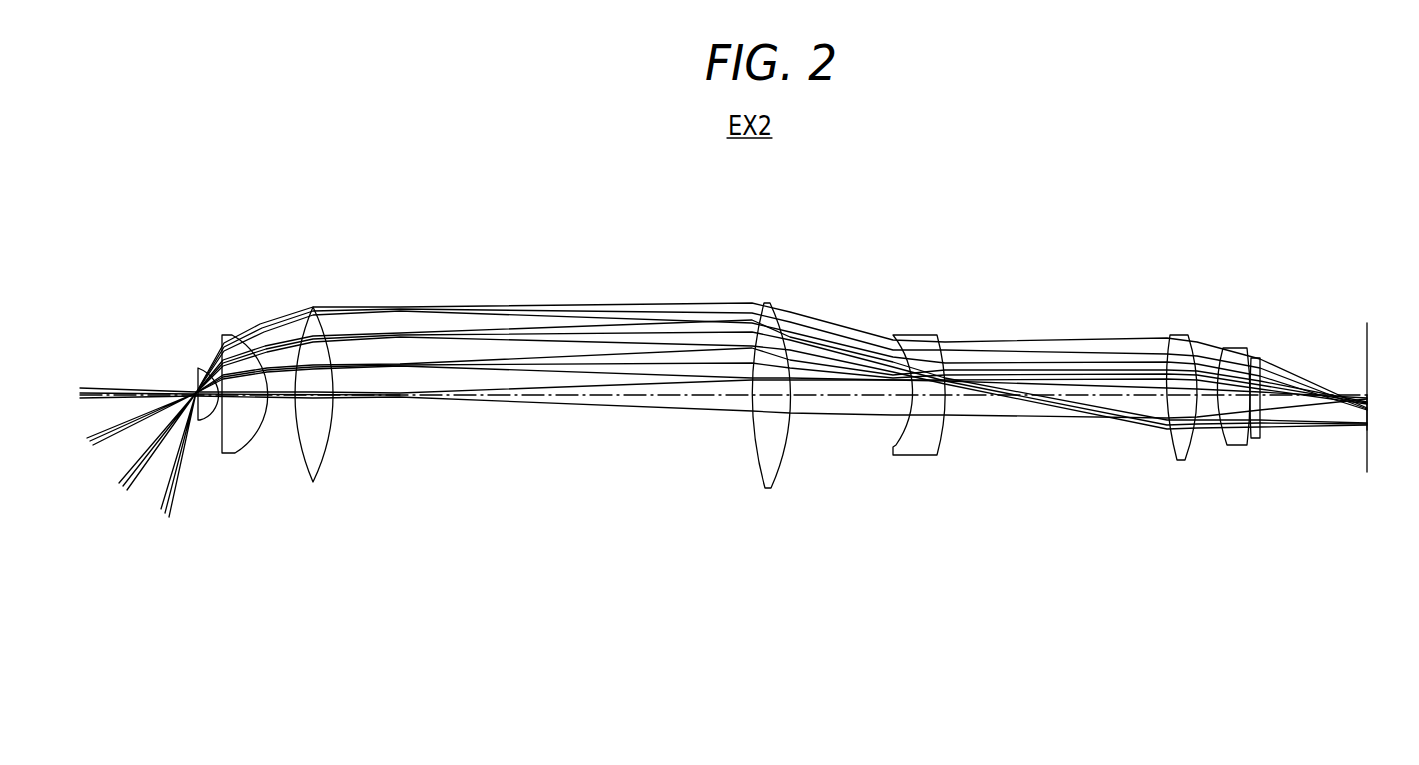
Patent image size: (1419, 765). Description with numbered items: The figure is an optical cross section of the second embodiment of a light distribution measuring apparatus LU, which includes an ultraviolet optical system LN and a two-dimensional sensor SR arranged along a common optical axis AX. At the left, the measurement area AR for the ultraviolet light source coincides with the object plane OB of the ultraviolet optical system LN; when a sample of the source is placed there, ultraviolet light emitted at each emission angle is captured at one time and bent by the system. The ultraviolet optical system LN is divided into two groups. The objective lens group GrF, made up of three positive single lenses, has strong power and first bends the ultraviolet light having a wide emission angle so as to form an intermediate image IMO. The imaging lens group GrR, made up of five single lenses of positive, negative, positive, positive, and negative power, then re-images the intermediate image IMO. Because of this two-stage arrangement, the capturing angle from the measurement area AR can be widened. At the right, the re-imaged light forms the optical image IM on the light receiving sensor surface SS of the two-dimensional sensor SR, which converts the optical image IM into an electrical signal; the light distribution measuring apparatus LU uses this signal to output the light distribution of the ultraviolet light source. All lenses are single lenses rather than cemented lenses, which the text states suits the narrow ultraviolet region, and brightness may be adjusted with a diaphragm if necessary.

The optical axis AX is at (110, 392).
The measurement area AR is at (190, 344).
The object plane OB is at (196, 344).
The intermediate image IMO is at (374, 410).
The light receiving sensor surface SS is at (1366, 356).
The two-dimensional sensor SR is at (1372, 384).
The optical image IM is at (1349, 444).
The objective lens group GrF is at (250, 418).
The imaging lens group GrR is at (990, 437).
The ultraviolet optical system LN is at (715, 454).
The light distribution measuring apparatus LU is at (790, 489).